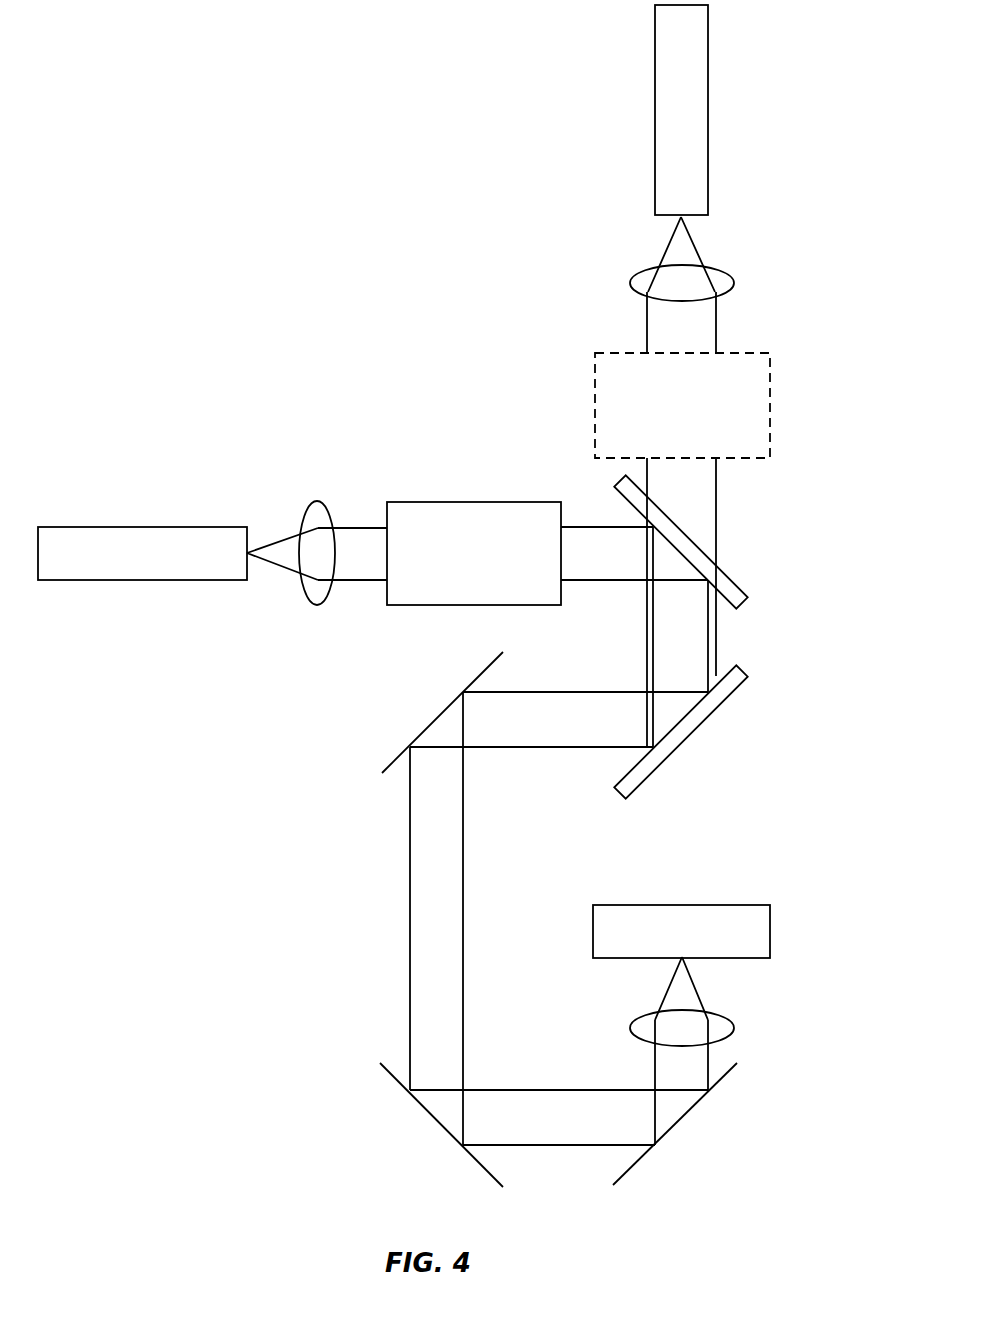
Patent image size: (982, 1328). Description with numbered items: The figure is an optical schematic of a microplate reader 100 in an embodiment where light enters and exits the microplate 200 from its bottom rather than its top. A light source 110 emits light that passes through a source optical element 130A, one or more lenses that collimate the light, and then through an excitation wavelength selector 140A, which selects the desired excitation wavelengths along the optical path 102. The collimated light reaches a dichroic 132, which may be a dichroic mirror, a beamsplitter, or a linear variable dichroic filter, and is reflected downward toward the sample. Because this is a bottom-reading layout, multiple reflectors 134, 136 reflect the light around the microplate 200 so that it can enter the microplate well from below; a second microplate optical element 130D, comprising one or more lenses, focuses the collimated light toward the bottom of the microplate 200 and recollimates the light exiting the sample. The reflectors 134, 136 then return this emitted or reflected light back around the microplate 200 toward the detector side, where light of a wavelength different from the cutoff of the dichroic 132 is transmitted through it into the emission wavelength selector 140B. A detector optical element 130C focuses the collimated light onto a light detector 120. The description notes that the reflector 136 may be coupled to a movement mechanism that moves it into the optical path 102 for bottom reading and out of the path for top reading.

The microplate reader 100 is at (280, 223).
The optical path 102 is at (717, 512).
The light source 110 is at (73, 526).
The light detector 120 is at (710, 52).
The source optical element 130A is at (312, 505).
The detector optical element 130C is at (723, 273).
The second microplate optical element 130D is at (733, 1028).
The dichroic 132 is at (743, 588).
The reflector 134 is at (438, 712).
The reflector 136 is at (733, 695).
The excitation wavelength selector 140A is at (443, 500).
The emission wavelength selector 140B is at (768, 387).
The microplate 200 is at (747, 958).